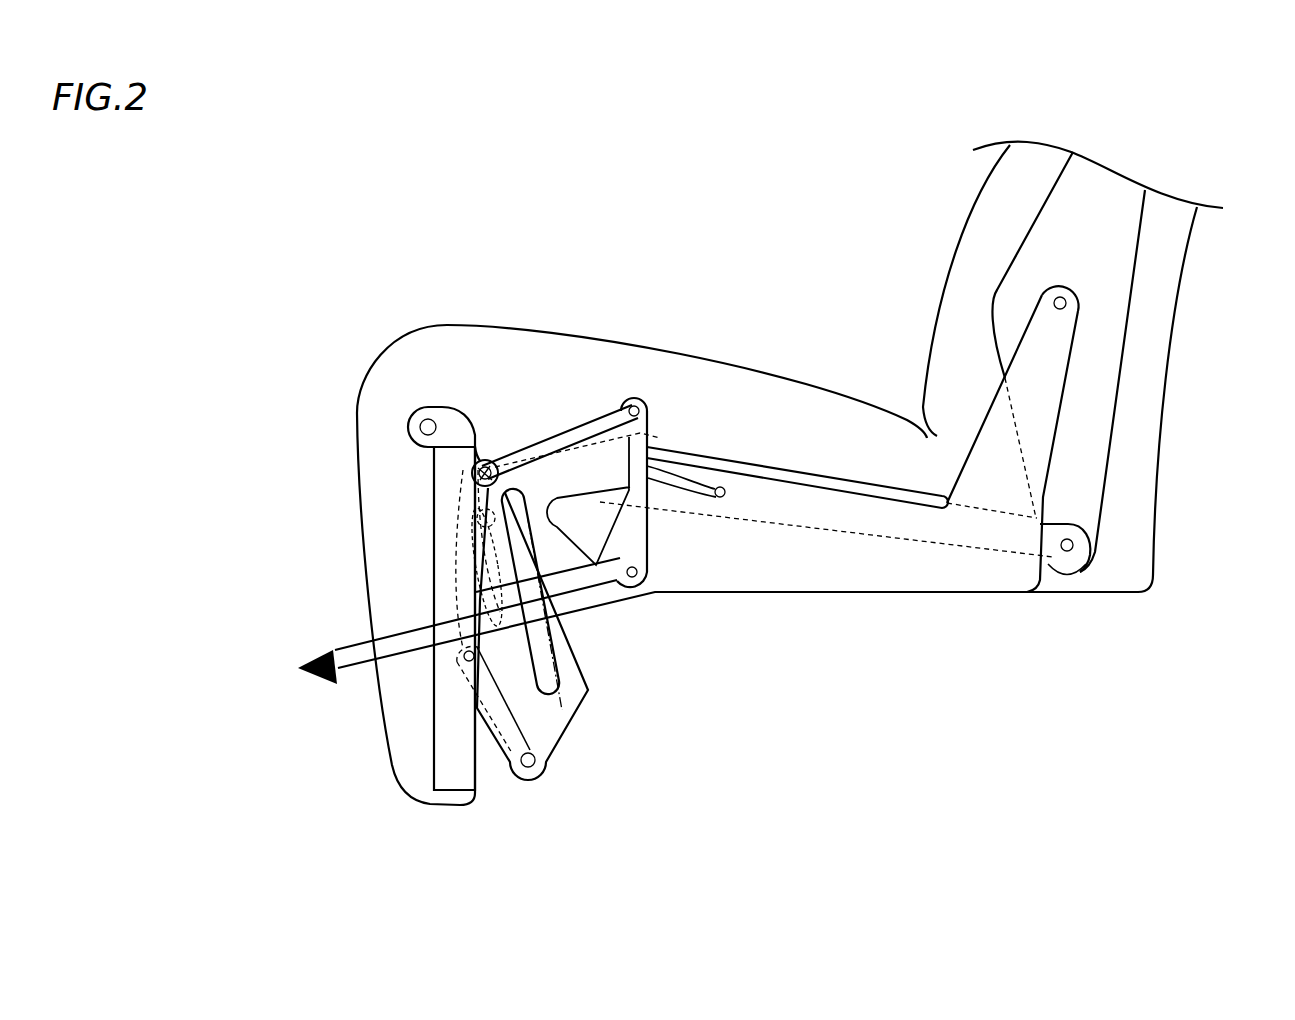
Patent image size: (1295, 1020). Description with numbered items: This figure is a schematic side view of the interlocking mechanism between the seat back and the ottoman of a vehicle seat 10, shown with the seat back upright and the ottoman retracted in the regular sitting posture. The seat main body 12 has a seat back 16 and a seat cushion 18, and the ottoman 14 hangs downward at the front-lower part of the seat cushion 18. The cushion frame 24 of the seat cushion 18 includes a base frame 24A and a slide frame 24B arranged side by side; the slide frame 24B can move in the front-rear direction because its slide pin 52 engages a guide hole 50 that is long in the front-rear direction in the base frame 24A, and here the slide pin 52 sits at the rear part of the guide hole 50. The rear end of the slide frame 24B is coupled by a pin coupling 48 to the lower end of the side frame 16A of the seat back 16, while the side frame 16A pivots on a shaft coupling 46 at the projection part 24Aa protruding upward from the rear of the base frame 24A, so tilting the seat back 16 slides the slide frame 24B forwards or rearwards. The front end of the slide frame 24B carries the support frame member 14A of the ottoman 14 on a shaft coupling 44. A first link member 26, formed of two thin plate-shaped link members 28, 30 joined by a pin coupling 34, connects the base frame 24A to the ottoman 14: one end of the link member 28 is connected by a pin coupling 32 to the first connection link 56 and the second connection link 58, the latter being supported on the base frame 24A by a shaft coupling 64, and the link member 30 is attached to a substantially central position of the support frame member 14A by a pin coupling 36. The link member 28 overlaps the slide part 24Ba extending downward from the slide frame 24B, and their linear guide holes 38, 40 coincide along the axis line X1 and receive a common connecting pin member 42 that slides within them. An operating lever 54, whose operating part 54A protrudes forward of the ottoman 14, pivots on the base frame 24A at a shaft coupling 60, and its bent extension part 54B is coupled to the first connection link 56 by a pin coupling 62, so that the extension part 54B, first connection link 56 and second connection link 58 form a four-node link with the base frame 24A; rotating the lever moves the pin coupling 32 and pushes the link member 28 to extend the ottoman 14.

The vehicle seat 10 is at (711, 255).
The seat main body 12 is at (727, 243).
The ottoman 14 is at (614, 531).
The support frame member 14A is at (455, 745).
The seat back 16 is at (956, 367).
The side frame 16A is at (1113, 265).
The seat cushion 18 is at (563, 333).
The cushion frame 24 is at (861, 680).
The base frame 24A is at (820, 593).
The projection part 24Aa is at (995, 430).
The slide frame 24B is at (698, 505).
The slide part 24Ba is at (557, 497).
The first link member 26 is at (578, 782).
The link member 28 is at (575, 634).
The link member 30 is at (493, 747).
The pin coupling 32 is at (496, 458).
The pin coupling 34 is at (537, 762).
The pin coupling 36 is at (460, 661).
The guide hole 38 is at (588, 591).
The guide hole 40 is at (560, 668).
The connecting pin member 42 is at (480, 550).
The shaft coupling 44 is at (410, 420).
The shaft coupling 46 is at (1068, 303).
The pin coupling 48 is at (1068, 551).
The guide hole 50 is at (682, 468).
The slide pin 52 is at (722, 487).
The operating lever 54 is at (475, 601).
The operating part 54A is at (299, 664).
The extension part 54B is at (640, 531).
The first connection link 56 is at (600, 413).
The second connection link 58 is at (483, 495).
The shaft coupling 60 is at (648, 572).
The pin coupling 62 is at (640, 403).
The shaft coupling 64 is at (470, 588).
The axis line X1 is at (545, 638).